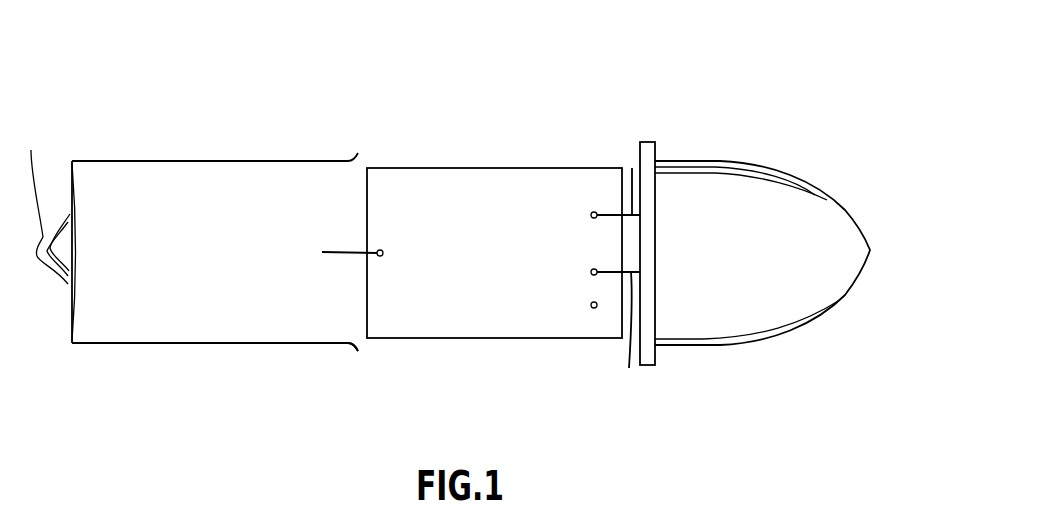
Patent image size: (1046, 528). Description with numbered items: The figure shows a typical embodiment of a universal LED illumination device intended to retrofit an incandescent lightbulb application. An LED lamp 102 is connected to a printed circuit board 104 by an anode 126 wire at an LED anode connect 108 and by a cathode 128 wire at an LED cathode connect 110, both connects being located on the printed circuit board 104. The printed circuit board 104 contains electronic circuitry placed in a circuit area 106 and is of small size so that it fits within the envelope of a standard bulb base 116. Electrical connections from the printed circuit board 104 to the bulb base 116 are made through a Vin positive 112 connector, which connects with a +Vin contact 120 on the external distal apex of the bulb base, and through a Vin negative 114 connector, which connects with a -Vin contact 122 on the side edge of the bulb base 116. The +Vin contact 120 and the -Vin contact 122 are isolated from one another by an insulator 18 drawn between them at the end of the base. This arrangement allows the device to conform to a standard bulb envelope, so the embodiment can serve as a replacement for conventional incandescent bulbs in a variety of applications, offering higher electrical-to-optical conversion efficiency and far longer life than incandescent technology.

The LED lamp 102 is at (829, 186).
The printed circuit board 104 is at (393, 182).
The circuit area 106 is at (477, 247).
The LED anode connect 108 is at (591, 214).
The LED cathode connect 110 is at (591, 274).
The Vin positive connector 112 is at (378, 256).
The Vin negative connector 114 is at (592, 308).
The standard bulb base 116 is at (265, 161).
The insulator 18 is at (70, 165).
The +Vin contact 120 is at (31, 150).
The -Vin contact 122 is at (107, 344).
The anode 126 is at (632, 168).
The cathode 128 is at (629, 368).